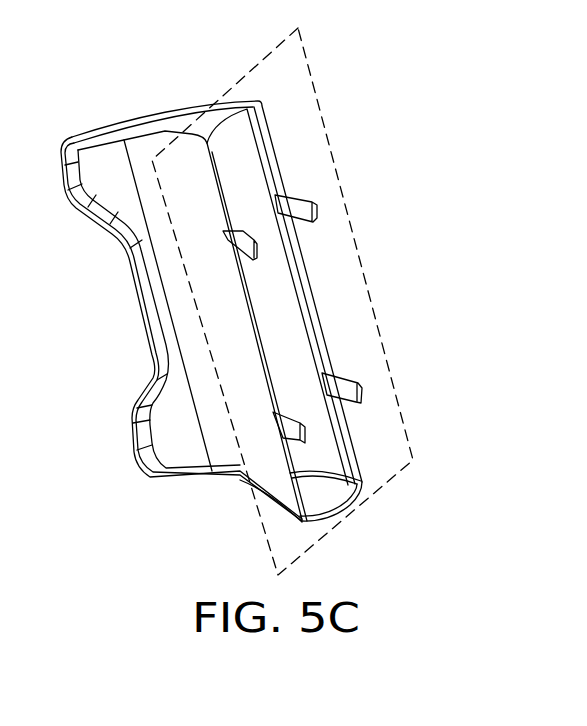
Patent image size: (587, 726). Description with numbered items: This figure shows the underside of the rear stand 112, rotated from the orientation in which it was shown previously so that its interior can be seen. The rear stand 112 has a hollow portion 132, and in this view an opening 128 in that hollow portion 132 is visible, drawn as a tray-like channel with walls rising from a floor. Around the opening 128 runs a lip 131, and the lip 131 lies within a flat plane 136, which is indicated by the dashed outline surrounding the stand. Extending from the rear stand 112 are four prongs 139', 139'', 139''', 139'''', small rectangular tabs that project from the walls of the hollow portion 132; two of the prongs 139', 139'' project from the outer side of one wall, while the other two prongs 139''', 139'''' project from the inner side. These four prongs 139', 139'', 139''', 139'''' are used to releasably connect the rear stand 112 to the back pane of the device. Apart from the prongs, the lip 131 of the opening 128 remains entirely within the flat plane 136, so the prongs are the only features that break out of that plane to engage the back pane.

The rear stand 112 is at (268, 42).
The opening 128 is at (284, 148).
The lip 131 is at (356, 511).
The hollow portion 132 is at (198, 106).
The flat plane 136 is at (332, 133).
The prong 139' is at (335, 181).
The prong 139'' is at (384, 358).
The prong 139''' is at (157, 256).
The prong 139'''' is at (210, 474).